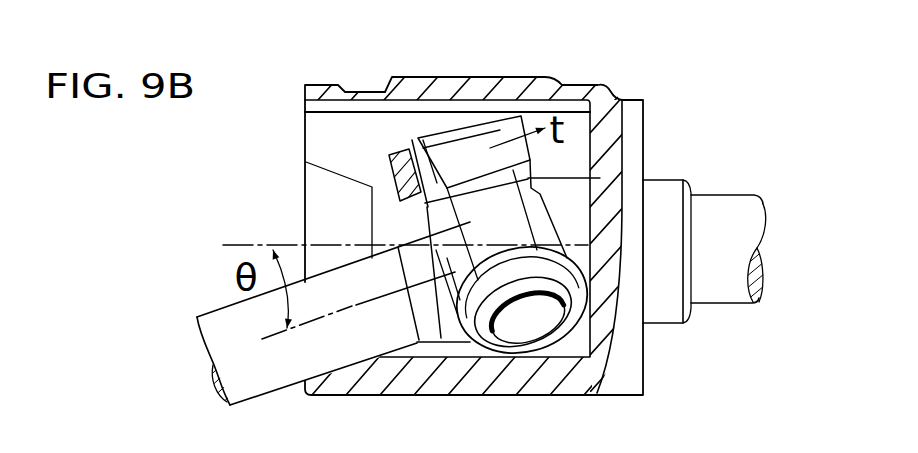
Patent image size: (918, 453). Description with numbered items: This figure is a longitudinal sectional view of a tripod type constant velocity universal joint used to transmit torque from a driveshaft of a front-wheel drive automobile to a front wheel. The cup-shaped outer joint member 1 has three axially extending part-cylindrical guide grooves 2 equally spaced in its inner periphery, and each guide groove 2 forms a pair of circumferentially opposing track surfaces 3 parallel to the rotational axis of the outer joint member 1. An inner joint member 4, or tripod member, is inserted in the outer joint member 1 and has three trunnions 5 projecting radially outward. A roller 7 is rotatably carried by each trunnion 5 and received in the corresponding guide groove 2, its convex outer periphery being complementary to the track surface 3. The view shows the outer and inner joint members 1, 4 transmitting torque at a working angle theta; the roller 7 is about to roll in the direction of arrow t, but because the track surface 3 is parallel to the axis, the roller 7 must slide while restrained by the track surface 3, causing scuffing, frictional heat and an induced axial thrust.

The outer joint member 1 is at (603, 85).
The guide groove 2 is at (372, 110).
The track surface 3 is at (570, 137).
The inner joint member 4 is at (530, 212).
The trunnion 5 is at (415, 147).
The roller 7 is at (484, 130).